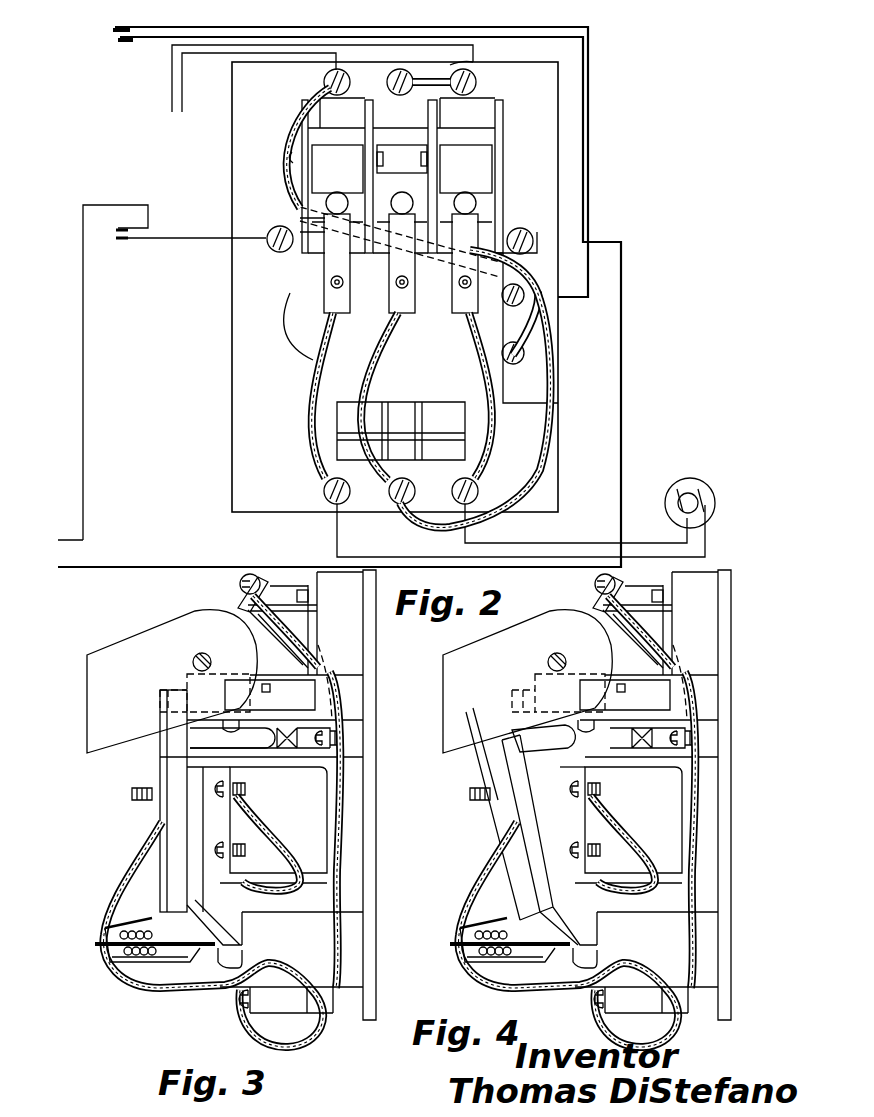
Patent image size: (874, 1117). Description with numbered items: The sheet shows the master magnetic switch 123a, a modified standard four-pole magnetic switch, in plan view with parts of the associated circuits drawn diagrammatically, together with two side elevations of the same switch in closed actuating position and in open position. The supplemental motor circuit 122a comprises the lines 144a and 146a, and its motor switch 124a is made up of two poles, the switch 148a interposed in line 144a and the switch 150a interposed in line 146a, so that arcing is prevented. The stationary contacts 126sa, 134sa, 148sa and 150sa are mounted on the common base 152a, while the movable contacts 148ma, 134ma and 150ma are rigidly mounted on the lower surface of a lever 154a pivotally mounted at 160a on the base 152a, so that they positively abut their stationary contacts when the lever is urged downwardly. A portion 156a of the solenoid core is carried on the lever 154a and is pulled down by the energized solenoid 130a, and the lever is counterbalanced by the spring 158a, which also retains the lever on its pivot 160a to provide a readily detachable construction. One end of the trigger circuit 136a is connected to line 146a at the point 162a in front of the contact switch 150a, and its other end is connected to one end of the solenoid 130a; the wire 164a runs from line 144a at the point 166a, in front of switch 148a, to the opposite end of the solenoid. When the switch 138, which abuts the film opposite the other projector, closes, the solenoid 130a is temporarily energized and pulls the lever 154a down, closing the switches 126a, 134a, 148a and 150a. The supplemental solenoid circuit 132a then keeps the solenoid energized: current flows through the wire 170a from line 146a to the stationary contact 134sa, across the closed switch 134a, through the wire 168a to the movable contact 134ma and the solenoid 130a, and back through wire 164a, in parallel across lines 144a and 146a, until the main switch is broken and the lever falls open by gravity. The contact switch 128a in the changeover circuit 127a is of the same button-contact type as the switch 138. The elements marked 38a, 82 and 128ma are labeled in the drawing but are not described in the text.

In FIG. 2, the switch 138 is at (117, 40).
In FIG. 2, the trigger circuit 136a is at (155, 30).
In FIG. 2, the supplemental motor circuit 122a is at (172, 72).
In FIG. 2, the line 144a is at (216, 55).
In FIG. 2, the magnetic switch 123a is at (596, 190).
In FIG. 3, the magnetic switch 123a is at (356, 645).
In FIG. 4, the magnetic switch 123a is at (692, 623).
In FIG. 2, the base 152a is at (583, 135).
In FIG. 3, the base 152a is at (370, 820).
In FIG. 4, the base 152a is at (750, 795).
In FIG. 2, the motor switch 124a is at (408, 270).
In FIG. 2, the stationary contact 148sa is at (337, 195).
In FIG. 2, the stationary contact 150sa is at (465, 195).
In FIG. 2, the stationary contact 134sa is at (400, 196).
In FIG. 2, the movable contact 148ma is at (332, 305).
In FIG. 2, the movable contact 134ma is at (395, 306).
In FIG. 2, the movable contact 150ma is at (458, 306).
In FIG. 2, the switch 148a is at (325, 502).
In FIG. 2, the switch 134a is at (401, 95).
In FIG. 2, the switch 150a is at (478, 492).
In FIG. 3, the switch 150a is at (170, 690).
In FIG. 4, the switch 150a is at (556, 681).
In FIG. 2, the point 166a is at (323, 82).
In FIG. 2, the point 162a is at (478, 82).
In FIG. 3, the point 162a is at (238, 590).
In FIG. 4, the point 162a is at (612, 647).
In FIG. 2, the wire 170a is at (452, 64).
In FIG. 2, the line 146a is at (482, 64).
In FIG. 2, the supplemental solenoid circuit 132a is at (272, 137).
In FIG. 2, the wire 164a is at (290, 175).
In FIG. 3, the wire 164a is at (330, 812).
In FIG. 4, the wire 164a is at (630, 825).
In FIG. 2, the changeover circuit 127a is at (183, 240).
In FIG. 2, the contact switch 128a is at (120, 242).
In FIG. 2, the stationary contact 126sa is at (294, 274).
In FIG. 2, the switch 126a is at (327, 268).
In FIG. 3, the switch 126a is at (294, 750).
In FIG. 4, the switch 126a is at (615, 755).
In FIG. 2, the coil terminal screw 128ma is at (515, 228).
In FIG. 2, the lever 154a is at (310, 363).
In FIG. 3, the lever 154a is at (175, 850).
In FIG. 4, the lever 154a is at (559, 877).
In FIG. 2, the solenoid 130a is at (513, 333).
In FIG. 3, the solenoid 130a is at (240, 770).
In FIG. 4, the solenoid 130a is at (574, 761).
In FIG. 2, the wire 168a is at (555, 438).
In FIG. 3, the wire 168a is at (300, 838).
In FIG. 4, the wire 168a is at (643, 830).
In FIG. 2, the return line 82 is at (87, 565).
In FIG. 2, the signal lamp 38a is at (708, 490).
In FIG. 3, the portion of the solenoid core 156a is at (203, 805).
In FIG. 4, the portion of the solenoid core 156a is at (535, 817).
In FIG. 3, the spring 158a is at (115, 962).
In FIG. 4, the spring 158a is at (501, 954).
In FIG. 3, the pivot 160a is at (243, 958).
In FIG. 4, the pivot 160a is at (611, 956).